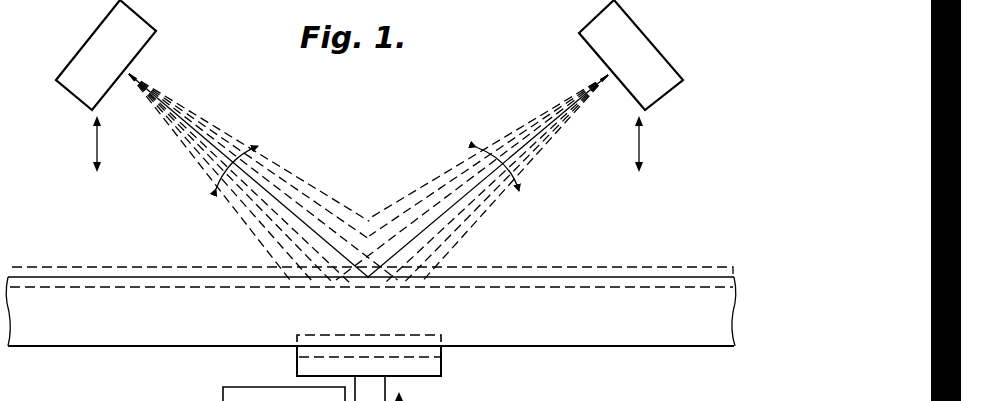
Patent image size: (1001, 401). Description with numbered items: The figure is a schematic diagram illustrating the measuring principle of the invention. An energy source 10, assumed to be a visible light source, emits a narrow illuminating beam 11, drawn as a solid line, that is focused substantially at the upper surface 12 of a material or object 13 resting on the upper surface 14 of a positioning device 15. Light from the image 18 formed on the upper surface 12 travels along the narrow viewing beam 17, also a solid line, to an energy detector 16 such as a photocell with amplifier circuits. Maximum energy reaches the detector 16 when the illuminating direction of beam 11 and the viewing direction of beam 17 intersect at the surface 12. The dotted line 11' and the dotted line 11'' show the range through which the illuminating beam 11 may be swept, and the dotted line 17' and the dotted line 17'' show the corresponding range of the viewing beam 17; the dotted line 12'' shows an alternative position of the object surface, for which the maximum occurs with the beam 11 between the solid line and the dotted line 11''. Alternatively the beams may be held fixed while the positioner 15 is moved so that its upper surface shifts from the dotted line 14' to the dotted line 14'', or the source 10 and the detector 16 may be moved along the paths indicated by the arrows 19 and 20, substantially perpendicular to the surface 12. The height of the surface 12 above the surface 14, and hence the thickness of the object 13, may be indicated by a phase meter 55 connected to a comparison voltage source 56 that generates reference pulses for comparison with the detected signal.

The energy source 10 is at (582, 35).
The illuminating beam 11 is at (472, 179).
The dotted-line position of illuminating beam 11' is at (514, 179).
The dotted-line position of illuminating beam 11'' is at (488, 155).
The upper surface 12 is at (371, 293).
The dotted-line position of upper surface 12'' is at (372, 257).
The material or object 13 is at (553, 287).
The upper surface of positioning device 14 is at (377, 327).
The dotted-line position of positioner upper surface 14' is at (391, 340).
The dotted-line position of positioner upper surface 14'' is at (369, 321).
The positioning device 15 is at (443, 362).
The energy detector 16 is at (148, 48).
The viewing beam 17 is at (263, 178).
The dotted-line position of viewing beam 17' is at (210, 178).
The dotted-line position of viewing beam 17'' is at (249, 156).
The image 18 is at (369, 280).
The arrow 19 is at (636, 143).
The arrow 20 is at (100, 143).
The phase meter 55 is at (172, 393).
The comparison voltage source 56 is at (245, 387).